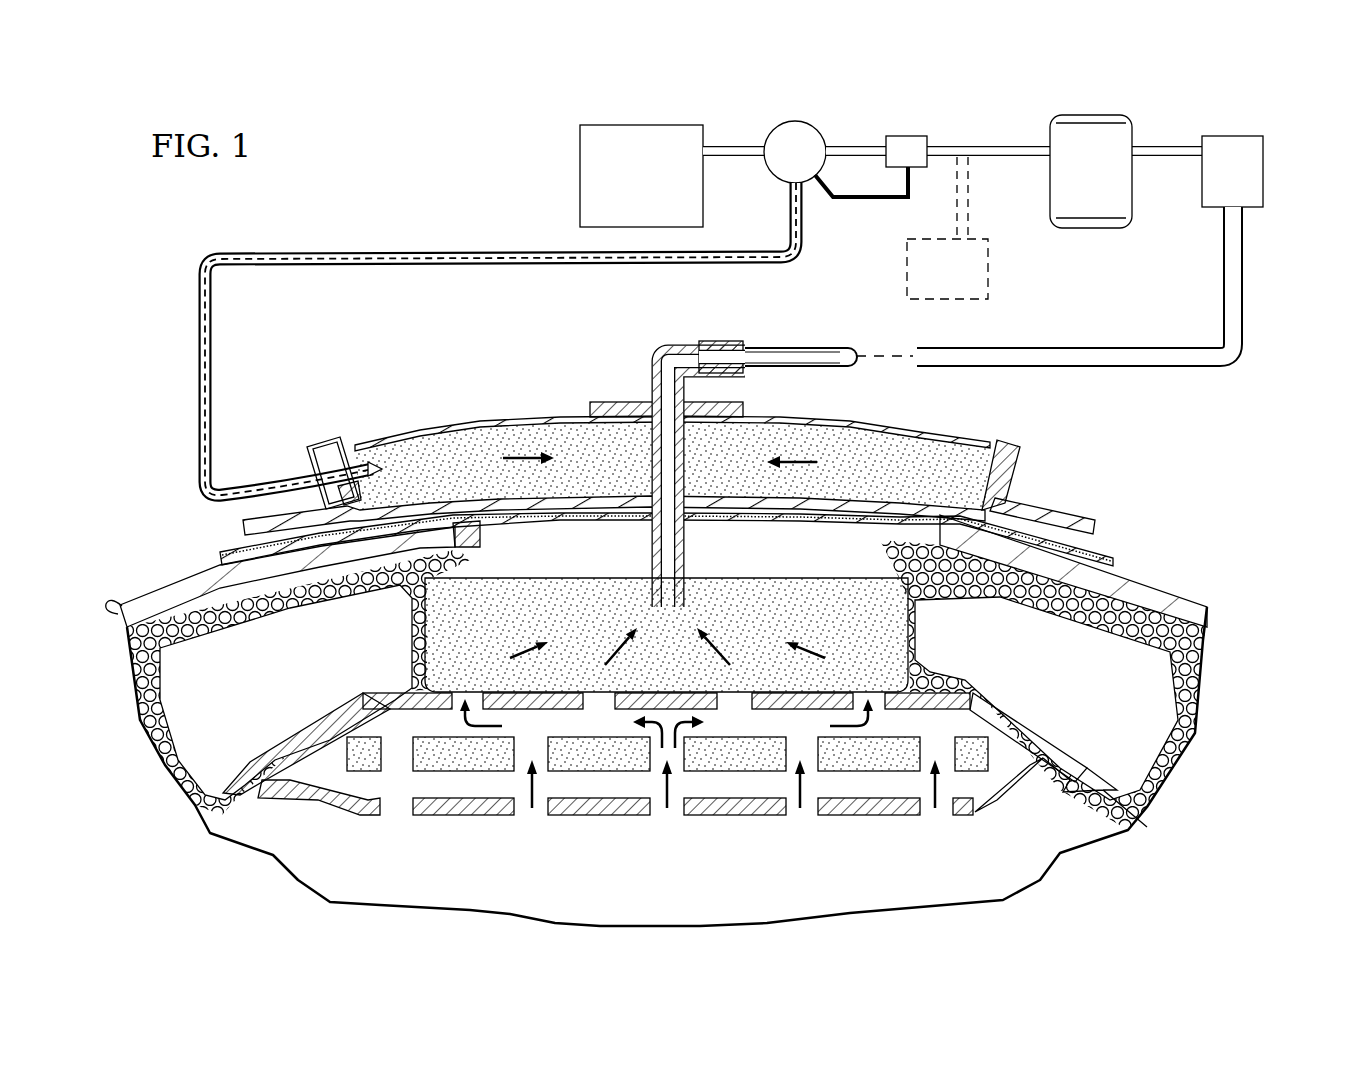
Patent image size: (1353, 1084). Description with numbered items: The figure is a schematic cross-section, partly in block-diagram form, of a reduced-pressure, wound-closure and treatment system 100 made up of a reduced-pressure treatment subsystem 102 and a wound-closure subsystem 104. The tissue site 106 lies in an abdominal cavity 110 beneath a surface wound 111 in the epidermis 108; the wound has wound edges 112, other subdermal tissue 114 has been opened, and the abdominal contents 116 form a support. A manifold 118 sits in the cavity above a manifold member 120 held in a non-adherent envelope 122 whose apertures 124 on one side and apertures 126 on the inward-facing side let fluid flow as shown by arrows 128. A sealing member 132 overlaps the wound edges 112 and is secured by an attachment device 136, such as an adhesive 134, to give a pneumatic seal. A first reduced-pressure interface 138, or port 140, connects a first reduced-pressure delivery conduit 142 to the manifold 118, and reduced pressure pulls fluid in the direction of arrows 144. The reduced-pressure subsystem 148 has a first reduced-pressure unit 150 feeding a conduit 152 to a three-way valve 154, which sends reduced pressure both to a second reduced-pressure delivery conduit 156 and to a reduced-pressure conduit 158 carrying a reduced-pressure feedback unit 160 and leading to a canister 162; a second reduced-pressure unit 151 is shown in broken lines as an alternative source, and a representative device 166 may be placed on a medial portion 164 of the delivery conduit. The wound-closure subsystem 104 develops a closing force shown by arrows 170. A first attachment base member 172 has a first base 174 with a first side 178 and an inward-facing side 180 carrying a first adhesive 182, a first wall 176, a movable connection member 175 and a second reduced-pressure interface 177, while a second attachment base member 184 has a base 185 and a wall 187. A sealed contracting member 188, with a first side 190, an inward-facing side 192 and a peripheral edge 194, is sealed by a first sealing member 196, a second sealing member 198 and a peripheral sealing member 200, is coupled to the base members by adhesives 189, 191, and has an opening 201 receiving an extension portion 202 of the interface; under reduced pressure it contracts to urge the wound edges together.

The reduced-pressure, wound-closure and treatment system 100 is at (364, 168).
The reduced-pressure treatment subsystem 102 is at (925, 630).
The wound-closure subsystem 104 is at (1108, 420).
The tissue site 106 is at (646, 834).
The epidermis 108 is at (1185, 593).
The abdominal cavity 110 is at (1080, 797).
The surface wound 111 is at (478, 535).
The wound edges 112 is at (462, 538).
The subdermal tissue 114 is at (227, 696).
The abdominal contents 116 is at (262, 788).
The manifold 118 is at (649, 671).
The manifold member 120 is at (410, 762).
The non-adherent envelope 122 is at (710, 808).
The apertures 124 is at (455, 690).
The apertures 126 is at (515, 810).
The arrows 128 is at (486, 728).
The sealing member 132 is at (150, 549).
The adhesive 134 is at (228, 566).
The attachment device 136 is at (626, 529).
The first reduced-pressure interface 138 is at (651, 346).
The port 140 is at (718, 341).
The first reduced-pressure delivery conduit 142 is at (828, 347).
The arrows 144 is at (667, 636).
The reduced-pressure subsystem 148 is at (738, 139).
The first reduced-pressure unit 150 is at (622, 186).
The second reduced-pressure unit 151 is at (929, 279).
The conduit 152 is at (731, 158).
The three-way valve 154 is at (777, 163).
The second reduced-pressure delivery conduit 156 is at (490, 254).
The reduced-pressure conduit 158 is at (855, 145).
The reduced-pressure feedback unit 160 is at (905, 135).
The canister 162 is at (1072, 181).
The medial portion 164 is at (1245, 255).
The representative device 166 is at (1242, 135).
The arrows 170 is at (510, 446).
The first attachment base member 172 is at (348, 546).
The first base 174 is at (243, 517).
The movable connection member 175 is at (305, 450).
The first wall 176 is at (322, 450).
The second reduced-pressure interface 177 is at (308, 470).
The first side 178 is at (268, 496).
The second, inward-facing side 180 is at (300, 572).
The first adhesive 182 is at (243, 524).
The second attachment base member 184 is at (1022, 468).
The base 185 is at (1050, 516).
The wall 187 is at (1022, 455).
The sealed contracting member 188 is at (548, 408).
The adhesive 189 is at (332, 445).
The first side 190 is at (858, 424).
The adhesive 191 is at (1003, 440).
The second, inward-facing side 192 is at (592, 512).
The peripheral edge 194 is at (985, 450).
The first sealing member 196 is at (468, 423).
The second sealing member 198 is at (470, 500).
The peripheral sealing member 200 is at (358, 452).
The opening 201 is at (625, 403).
The extension portion 202 is at (647, 458).